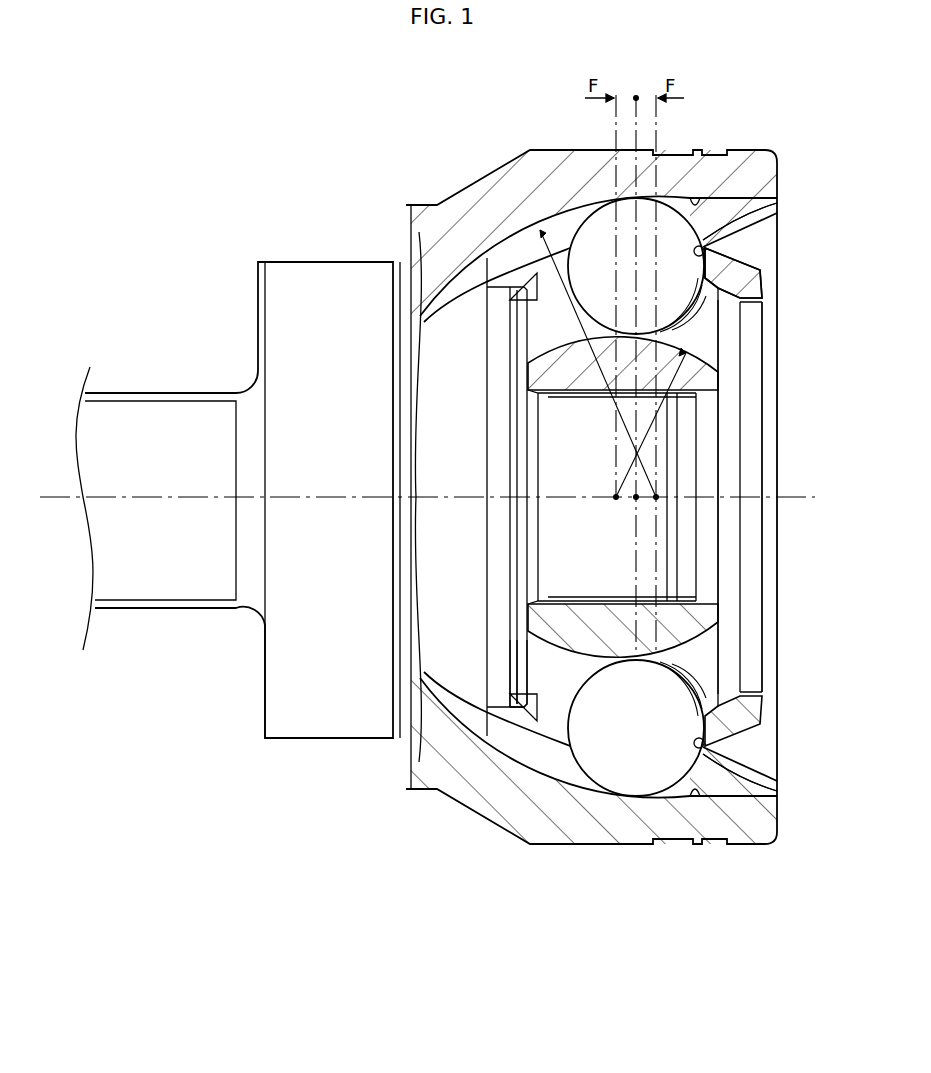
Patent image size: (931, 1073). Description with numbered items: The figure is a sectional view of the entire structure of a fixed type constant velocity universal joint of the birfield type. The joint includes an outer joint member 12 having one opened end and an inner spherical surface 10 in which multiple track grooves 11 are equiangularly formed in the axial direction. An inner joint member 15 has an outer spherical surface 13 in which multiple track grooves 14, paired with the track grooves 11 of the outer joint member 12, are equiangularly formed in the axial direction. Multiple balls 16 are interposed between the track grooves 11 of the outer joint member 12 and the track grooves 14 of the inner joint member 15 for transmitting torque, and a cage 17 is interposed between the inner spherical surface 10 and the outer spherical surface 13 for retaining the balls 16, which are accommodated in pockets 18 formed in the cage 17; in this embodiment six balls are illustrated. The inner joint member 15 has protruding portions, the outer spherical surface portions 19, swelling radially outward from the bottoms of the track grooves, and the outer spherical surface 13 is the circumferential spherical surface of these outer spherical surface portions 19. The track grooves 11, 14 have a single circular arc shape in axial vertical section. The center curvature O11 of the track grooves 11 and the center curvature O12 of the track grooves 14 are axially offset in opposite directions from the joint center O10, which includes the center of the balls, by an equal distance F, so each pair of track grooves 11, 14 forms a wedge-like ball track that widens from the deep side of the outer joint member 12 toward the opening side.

The inner spherical surface 10 is at (591, 512).
The track grooves 11 is at (701, 247).
The outer joint member 12 is at (516, 818).
The outer spherical surface 13 is at (530, 735).
The track grooves 14 is at (720, 636).
The inner joint member 15 is at (545, 376).
The balls 16 is at (600, 230).
The cage 17 is at (748, 272).
The pockets 18 is at (742, 210).
The outer spherical surface portions 19 is at (706, 316).
The center curvature of the track grooves of the inner joint member O12 is at (612, 502).
The joint center O10 is at (634, 502).
The center curvature of the track grooves of the outer joint member O11 is at (656, 503).